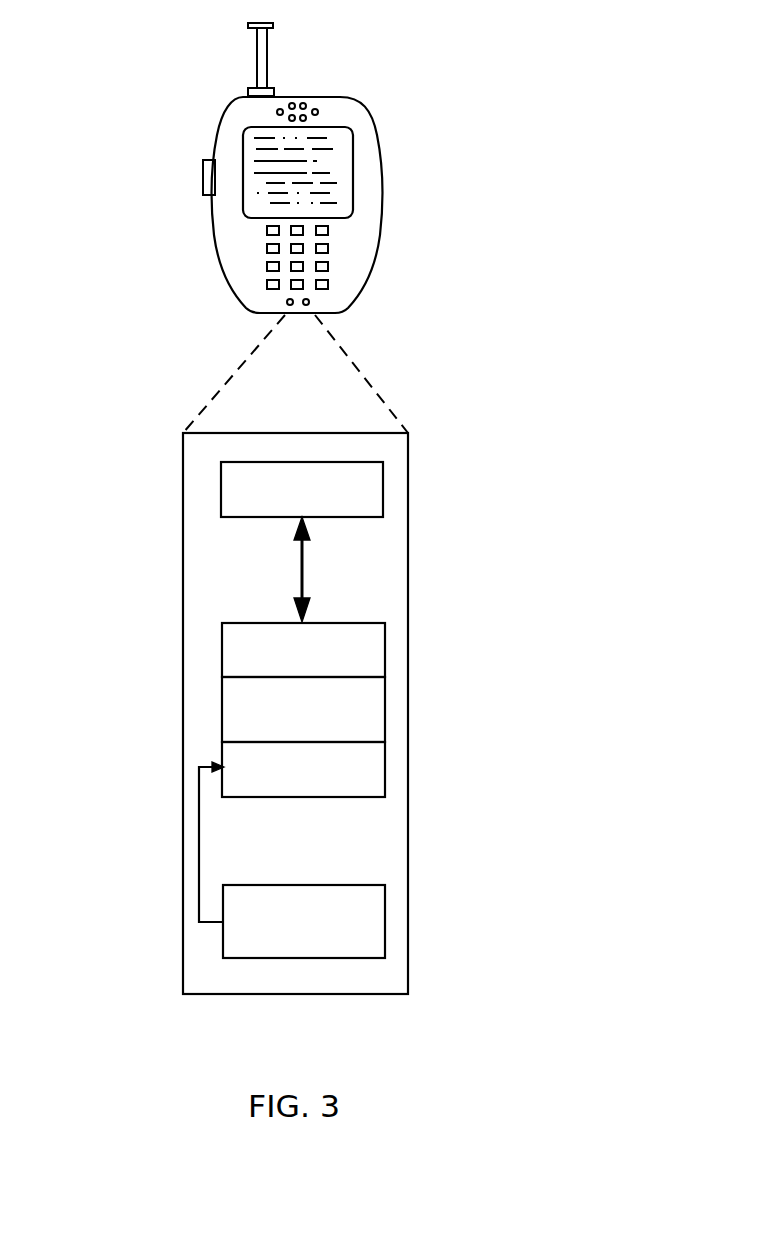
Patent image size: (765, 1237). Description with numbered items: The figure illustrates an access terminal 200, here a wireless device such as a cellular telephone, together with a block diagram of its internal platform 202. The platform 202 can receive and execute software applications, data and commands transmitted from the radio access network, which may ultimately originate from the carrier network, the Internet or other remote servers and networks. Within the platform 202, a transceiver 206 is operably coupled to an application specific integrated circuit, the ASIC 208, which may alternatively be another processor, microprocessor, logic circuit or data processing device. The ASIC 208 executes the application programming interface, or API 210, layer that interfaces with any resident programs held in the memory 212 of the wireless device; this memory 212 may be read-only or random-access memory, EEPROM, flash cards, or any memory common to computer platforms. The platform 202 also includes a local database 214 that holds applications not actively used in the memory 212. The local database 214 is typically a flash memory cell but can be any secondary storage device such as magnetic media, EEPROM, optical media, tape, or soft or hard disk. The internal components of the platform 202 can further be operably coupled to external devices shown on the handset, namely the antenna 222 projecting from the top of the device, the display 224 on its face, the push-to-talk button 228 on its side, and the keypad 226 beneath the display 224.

The access terminal 200 is at (360, 292).
The platform 202 is at (183, 624).
The transceiver 206 is at (383, 490).
The application specific integrated circuit 208 is at (385, 658).
The application programming interface 210 is at (385, 705).
The memory 212 is at (385, 770).
The local database 214 is at (385, 905).
The antenna 222 is at (268, 38).
The display 224 is at (353, 160).
The keypad 226 is at (328, 248).
The push-to-talk button 228 is at (203, 173).